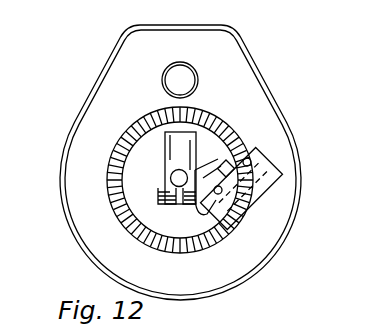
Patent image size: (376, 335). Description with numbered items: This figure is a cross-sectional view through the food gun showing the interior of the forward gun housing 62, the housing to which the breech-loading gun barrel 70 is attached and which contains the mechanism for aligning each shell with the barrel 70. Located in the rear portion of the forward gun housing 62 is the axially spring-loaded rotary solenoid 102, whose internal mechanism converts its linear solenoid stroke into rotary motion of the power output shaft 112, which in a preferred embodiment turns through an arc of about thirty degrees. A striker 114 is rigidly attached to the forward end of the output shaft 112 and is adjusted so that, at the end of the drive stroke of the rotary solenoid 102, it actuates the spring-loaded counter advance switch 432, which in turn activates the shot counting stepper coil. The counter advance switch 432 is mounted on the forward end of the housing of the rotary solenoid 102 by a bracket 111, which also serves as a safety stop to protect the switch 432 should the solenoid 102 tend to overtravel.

The forward gun housing 62 is at (115, 53).
The gun barrel 70 is at (203, 72).
The striker 114 is at (219, 122).
The rotary solenoid 102 is at (178, 182).
The counter advance switch 432 is at (257, 148).
The power output shaft 112 is at (256, 148).
The bracket 111 is at (199, 217).